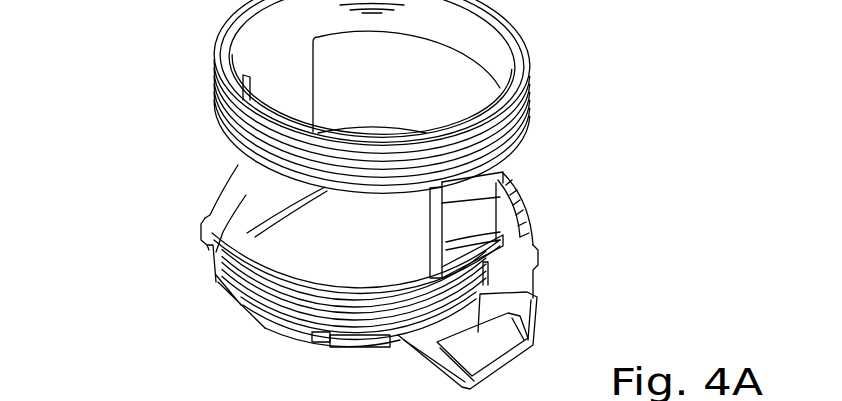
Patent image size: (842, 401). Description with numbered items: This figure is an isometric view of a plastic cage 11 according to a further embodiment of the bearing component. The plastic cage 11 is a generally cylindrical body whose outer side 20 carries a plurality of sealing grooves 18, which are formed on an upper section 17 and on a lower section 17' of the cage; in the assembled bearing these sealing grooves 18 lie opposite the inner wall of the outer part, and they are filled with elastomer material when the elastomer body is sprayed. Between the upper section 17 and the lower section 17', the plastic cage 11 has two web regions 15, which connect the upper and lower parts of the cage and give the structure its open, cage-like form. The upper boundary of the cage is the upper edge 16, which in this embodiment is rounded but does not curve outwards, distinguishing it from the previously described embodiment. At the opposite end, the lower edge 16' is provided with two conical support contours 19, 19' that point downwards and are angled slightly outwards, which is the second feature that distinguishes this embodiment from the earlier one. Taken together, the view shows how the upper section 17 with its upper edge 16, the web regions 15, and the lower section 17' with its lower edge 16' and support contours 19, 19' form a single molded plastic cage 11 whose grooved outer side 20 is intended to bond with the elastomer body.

The plastic cage 11 is at (658, 31).
The web region 15 is at (79, 45).
The upper edge 16 is at (299, 72).
The upper section 17 is at (304, 150).
The sealing groove 18 is at (660, 239).
The conical support contour 19 is at (531, 340).
The conical support contour 19' is at (193, 208).
The outer side 20 is at (518, 101).
The lower edge 16' is at (445, 250).
The lower section 17' is at (138, 253).